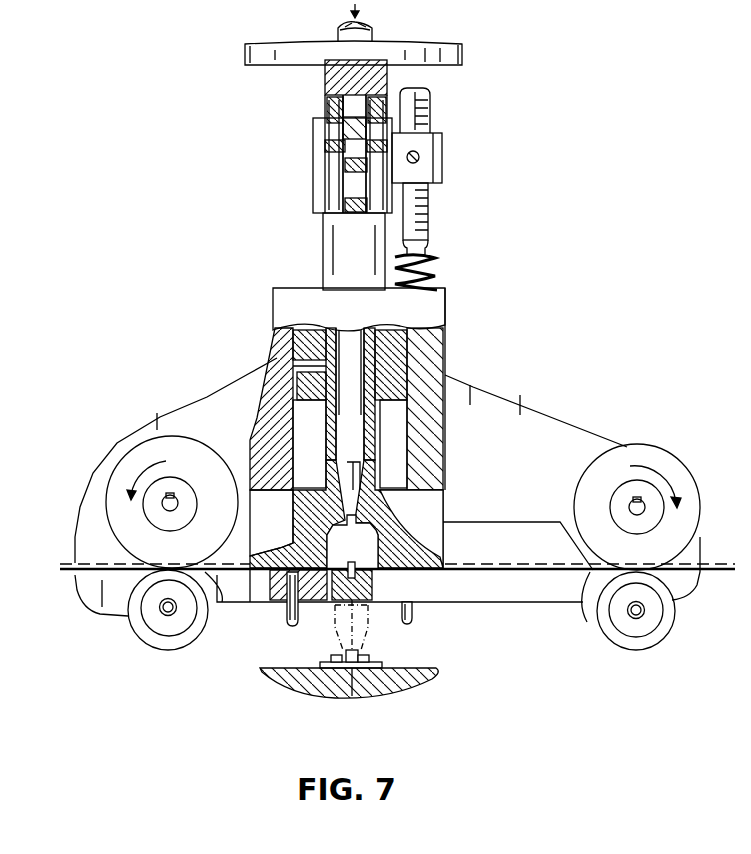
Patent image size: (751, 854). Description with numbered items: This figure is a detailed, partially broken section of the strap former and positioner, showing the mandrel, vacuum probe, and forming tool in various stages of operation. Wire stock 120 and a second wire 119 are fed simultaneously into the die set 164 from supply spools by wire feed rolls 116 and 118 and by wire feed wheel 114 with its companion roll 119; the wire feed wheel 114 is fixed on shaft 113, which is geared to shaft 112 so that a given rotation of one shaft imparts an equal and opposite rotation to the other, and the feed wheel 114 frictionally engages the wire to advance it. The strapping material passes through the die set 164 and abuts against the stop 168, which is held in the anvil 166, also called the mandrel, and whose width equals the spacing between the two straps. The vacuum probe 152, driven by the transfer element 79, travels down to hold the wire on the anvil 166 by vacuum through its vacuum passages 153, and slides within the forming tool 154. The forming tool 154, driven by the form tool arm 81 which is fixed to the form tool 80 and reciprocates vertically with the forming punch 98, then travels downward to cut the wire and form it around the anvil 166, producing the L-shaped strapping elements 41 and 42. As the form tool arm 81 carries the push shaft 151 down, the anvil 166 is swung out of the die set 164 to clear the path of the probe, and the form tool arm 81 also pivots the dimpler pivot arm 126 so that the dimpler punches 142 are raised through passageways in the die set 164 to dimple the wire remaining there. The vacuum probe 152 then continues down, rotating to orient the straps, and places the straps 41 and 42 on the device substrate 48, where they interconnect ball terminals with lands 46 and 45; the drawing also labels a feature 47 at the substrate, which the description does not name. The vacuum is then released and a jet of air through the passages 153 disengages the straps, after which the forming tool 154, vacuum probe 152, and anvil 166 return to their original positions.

The transfer element 79 is at (374, 33).
The form tool 80 is at (463, 53).
The form tool arm 81 is at (318, 200).
The forming punch 98 is at (318, 124).
The dimpler pivot arm 126 is at (367, 147).
The push shaft 151 is at (425, 250).
The vacuum probe 152 is at (302, 506).
The vacuum passages 153 is at (396, 640).
The forming tool 154 is at (388, 497).
The dimpler punch 142 is at (288, 605).
The die set 164 is at (226, 575).
The anvil 166 is at (342, 603).
The stop 168 is at (356, 580).
The strapping element 41 is at (332, 656).
The strapping element 42 is at (382, 656).
The land 45 is at (381, 664).
The land 46 is at (323, 664).
The stem 47 is at (352, 672).
The device substrate 48 is at (412, 688).
The shaft 112 is at (165, 505).
The shaft 113 is at (630, 508).
The wire feed wheel 114 is at (672, 467).
The wire feed roll 116 is at (122, 468).
The wire feed roll 118 is at (137, 627).
The wire 119 is at (662, 633).
The wire stock 120 is at (95, 566).